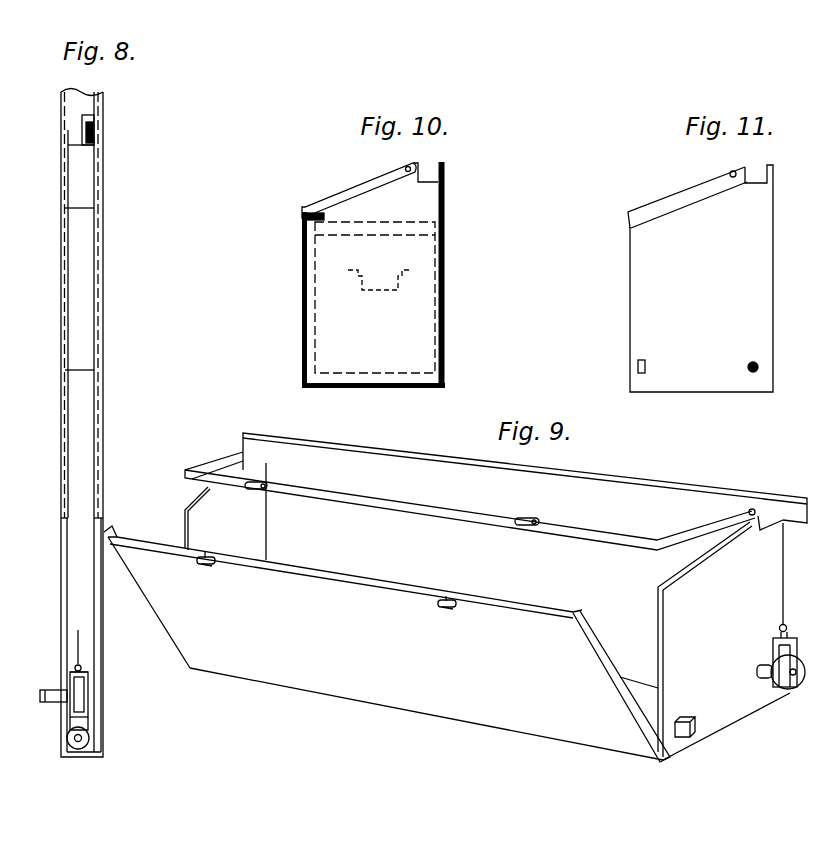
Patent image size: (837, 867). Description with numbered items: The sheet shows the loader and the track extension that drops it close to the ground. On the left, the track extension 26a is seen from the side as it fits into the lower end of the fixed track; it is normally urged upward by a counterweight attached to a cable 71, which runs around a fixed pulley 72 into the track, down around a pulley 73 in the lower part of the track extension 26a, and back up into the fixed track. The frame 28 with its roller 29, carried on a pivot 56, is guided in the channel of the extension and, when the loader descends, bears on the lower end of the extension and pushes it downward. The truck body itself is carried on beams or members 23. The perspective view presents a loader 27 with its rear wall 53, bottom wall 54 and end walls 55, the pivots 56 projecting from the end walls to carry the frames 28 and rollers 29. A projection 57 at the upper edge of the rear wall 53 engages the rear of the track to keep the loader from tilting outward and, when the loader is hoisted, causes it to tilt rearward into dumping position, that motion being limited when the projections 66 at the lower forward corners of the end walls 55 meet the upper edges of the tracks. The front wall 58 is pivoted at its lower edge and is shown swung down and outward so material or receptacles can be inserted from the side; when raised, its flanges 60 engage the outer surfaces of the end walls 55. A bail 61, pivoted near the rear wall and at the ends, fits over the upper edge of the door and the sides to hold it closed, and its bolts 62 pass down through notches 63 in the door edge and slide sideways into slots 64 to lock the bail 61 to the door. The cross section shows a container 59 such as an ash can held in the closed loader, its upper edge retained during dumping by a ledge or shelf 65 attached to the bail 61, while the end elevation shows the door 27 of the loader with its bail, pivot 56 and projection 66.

In FIG. 8, the beams or members 23 is at (67, 749).
In FIG. 8, the track extension 26a is at (102, 627).
In FIG. 11, the loader 27 is at (629, 291).
In FIG. 9, the loader 27 is at (730, 717).
In FIG. 8, the frame 28 is at (69, 669).
In FIG. 9, the frame 28 is at (792, 641).
In FIG. 8, the roller 29 is at (82, 697).
In FIG. 9, the roller 29 is at (788, 696).
In FIG. 10, the rear wall 53 is at (444, 264).
In FIG. 10, the bottom wall 54 is at (374, 389).
In FIG. 9, the end wall 55 is at (468, 610).
In FIG. 8, the pivot 56 is at (46, 703).
In FIG. 11, the pivot 56 is at (748, 363).
In FIG. 9, the pivot 56 is at (760, 674).
In FIG. 9, the projection 57 is at (790, 505).
In FIG. 9, the front wall 58 is at (352, 686).
In FIG. 10, the container 59 is at (322, 309).
In FIG. 9, the flange 60 is at (112, 531).
In FIG. 11, the bail 61 is at (664, 207).
In FIG. 9, the bail 61 is at (403, 506).
In FIG. 9, the bolt 62 is at (266, 485).
In FIG. 9, the notch 63 is at (209, 557).
In FIG. 9, the slot 64 is at (207, 566).
In FIG. 10, the ledge or shelf 65 is at (318, 221).
In FIG. 11, the projection 66 is at (638, 366).
In FIG. 9, the projection 66 is at (686, 740).
In FIG. 8, the cable 71 is at (94, 262).
In FIG. 8, the fixed pulley 72 is at (95, 124).
In FIG. 8, the pulley 73 is at (80, 749).